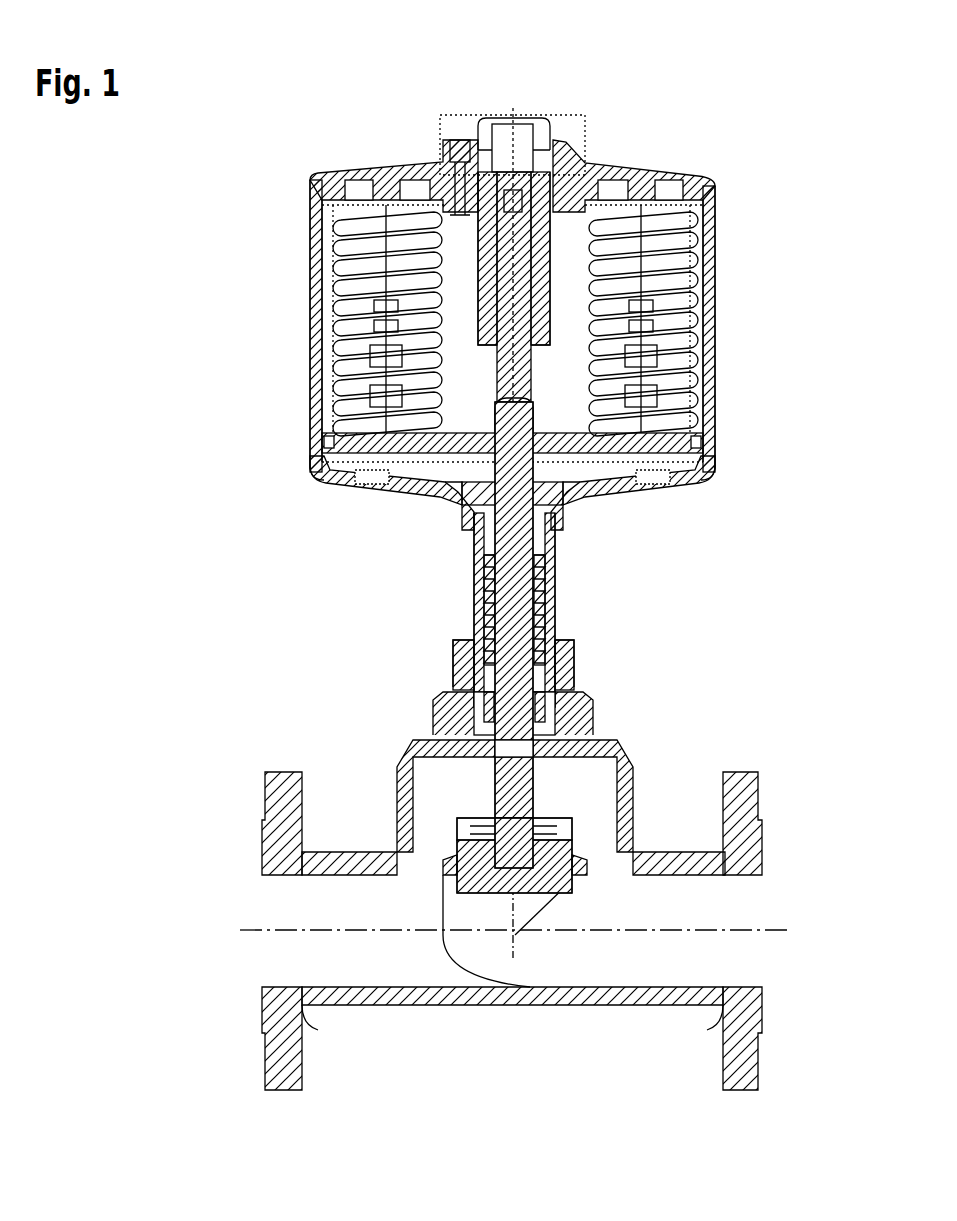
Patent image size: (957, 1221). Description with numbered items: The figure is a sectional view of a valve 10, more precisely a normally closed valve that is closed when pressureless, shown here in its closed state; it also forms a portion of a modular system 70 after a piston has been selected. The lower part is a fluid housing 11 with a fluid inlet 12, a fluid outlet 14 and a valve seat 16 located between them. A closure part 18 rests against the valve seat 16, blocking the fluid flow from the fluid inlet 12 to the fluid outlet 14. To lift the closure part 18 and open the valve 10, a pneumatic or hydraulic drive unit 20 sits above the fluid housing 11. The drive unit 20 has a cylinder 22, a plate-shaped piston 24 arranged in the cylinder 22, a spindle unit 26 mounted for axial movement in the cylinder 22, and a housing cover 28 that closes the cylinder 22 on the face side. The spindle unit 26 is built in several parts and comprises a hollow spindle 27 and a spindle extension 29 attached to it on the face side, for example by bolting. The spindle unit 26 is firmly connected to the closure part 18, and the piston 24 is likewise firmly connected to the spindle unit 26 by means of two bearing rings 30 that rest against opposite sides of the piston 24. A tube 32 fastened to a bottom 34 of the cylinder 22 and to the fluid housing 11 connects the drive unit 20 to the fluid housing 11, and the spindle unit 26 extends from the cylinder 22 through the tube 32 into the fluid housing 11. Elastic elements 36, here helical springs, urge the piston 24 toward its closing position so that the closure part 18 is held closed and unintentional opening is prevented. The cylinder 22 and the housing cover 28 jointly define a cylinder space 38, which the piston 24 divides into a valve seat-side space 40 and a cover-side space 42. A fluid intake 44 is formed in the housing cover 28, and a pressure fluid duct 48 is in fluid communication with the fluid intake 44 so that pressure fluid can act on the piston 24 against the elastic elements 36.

The valve 10 is at (726, 134).
The modular system 70 is at (726, 134).
The fluid housing 11 is at (652, 852).
The fluid inlet 12 is at (751, 908).
The fluid outlet 14 is at (263, 912).
The valve seat 16 is at (462, 860).
The closure part 18 is at (492, 832).
The drive unit 20 is at (735, 413).
The cylinder 22 is at (709, 258).
The piston 24 is at (657, 450).
The spindle unit 26 is at (605, 380).
The hollow spindle 27 is at (547, 318).
The housing cover 28 is at (602, 184).
The spindle extension 29 is at (547, 583).
The bearing rings 30 is at (490, 425).
The tube 32 is at (547, 634).
The bottom 34 is at (602, 481).
The elastic elements 36 is at (692, 225).
The cylinder space 38 is at (458, 373).
The valve seat-side space 40 is at (336, 466).
The cover-side space 42 is at (327, 232).
The fluid intake 44 is at (484, 150).
The pressure fluid duct 48 is at (446, 165).